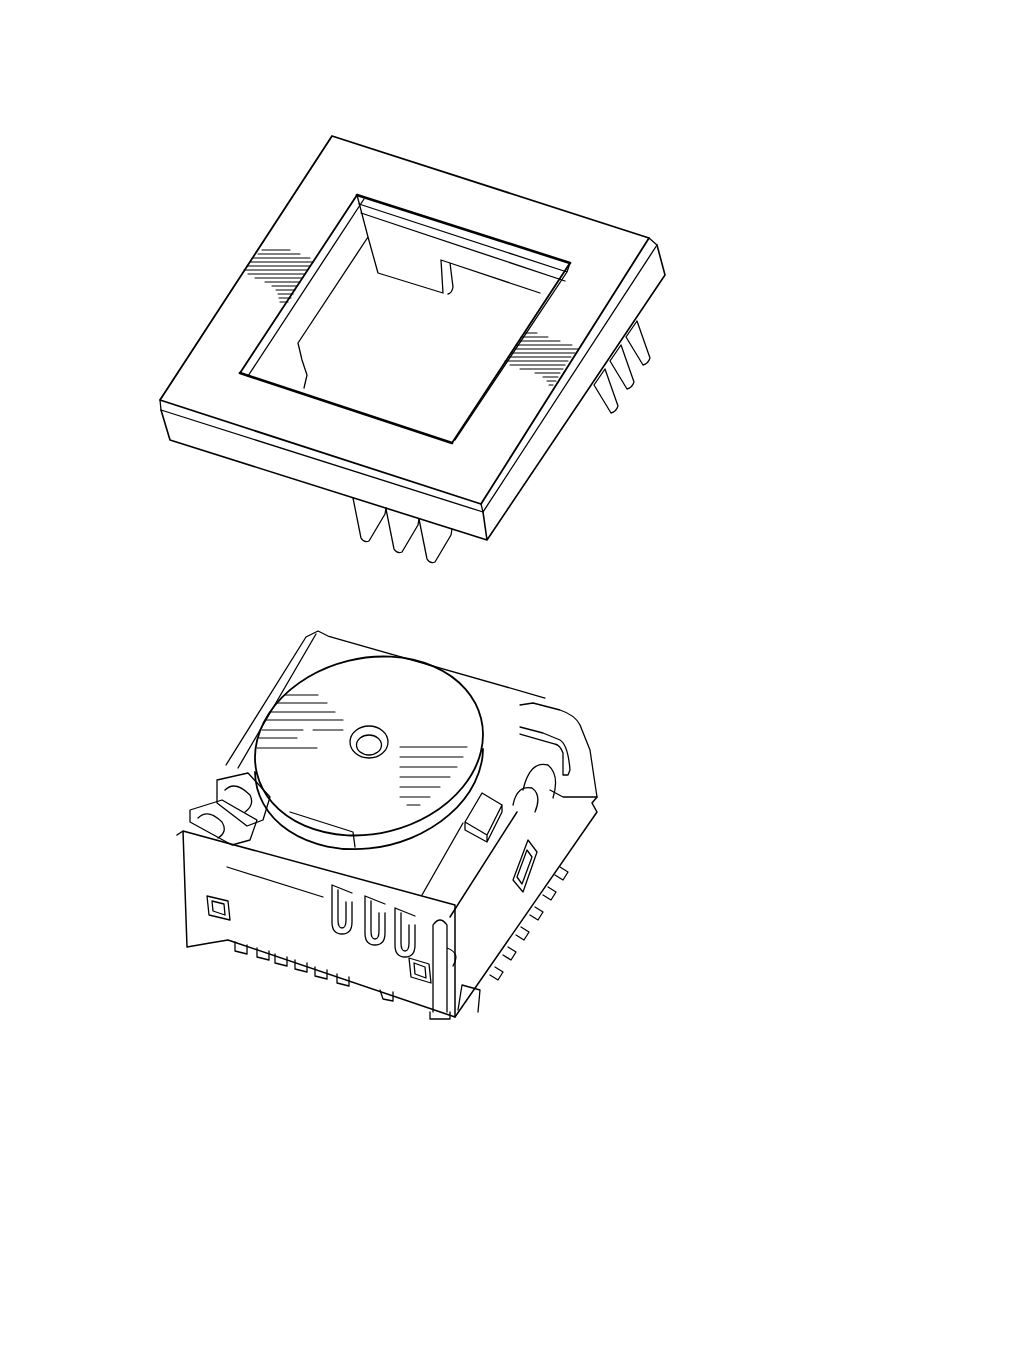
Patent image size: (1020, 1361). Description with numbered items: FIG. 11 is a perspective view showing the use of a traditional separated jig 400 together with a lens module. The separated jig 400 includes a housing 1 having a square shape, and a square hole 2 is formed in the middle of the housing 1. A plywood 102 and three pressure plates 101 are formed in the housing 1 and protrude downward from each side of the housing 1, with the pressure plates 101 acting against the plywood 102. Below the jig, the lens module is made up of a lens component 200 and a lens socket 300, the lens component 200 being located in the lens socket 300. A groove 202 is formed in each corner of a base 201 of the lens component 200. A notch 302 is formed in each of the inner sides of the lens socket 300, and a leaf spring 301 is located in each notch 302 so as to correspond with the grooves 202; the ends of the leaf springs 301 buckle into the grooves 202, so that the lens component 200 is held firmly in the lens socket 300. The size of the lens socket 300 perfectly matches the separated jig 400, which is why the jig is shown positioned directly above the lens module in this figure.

The separated jig 400 is at (272, 170).
The housing 1 is at (617, 245).
The square hole 2 is at (485, 302).
The pressure plates 101 is at (438, 538).
The plywood 102 is at (403, 270).
The lens component 200 is at (424, 732).
The base 201 is at (497, 757).
The groove 202 is at (505, 794).
The lens socket 300 is at (592, 843).
The leaf spring 301 is at (232, 820).
The notch 302 is at (258, 790).